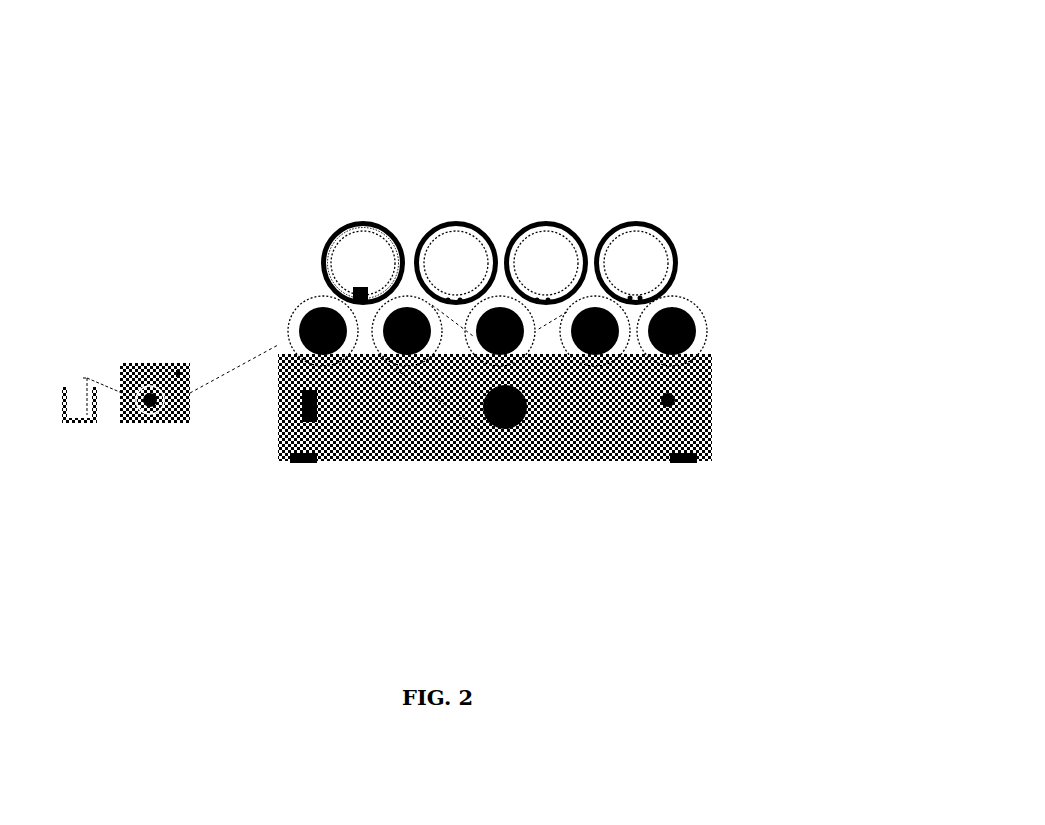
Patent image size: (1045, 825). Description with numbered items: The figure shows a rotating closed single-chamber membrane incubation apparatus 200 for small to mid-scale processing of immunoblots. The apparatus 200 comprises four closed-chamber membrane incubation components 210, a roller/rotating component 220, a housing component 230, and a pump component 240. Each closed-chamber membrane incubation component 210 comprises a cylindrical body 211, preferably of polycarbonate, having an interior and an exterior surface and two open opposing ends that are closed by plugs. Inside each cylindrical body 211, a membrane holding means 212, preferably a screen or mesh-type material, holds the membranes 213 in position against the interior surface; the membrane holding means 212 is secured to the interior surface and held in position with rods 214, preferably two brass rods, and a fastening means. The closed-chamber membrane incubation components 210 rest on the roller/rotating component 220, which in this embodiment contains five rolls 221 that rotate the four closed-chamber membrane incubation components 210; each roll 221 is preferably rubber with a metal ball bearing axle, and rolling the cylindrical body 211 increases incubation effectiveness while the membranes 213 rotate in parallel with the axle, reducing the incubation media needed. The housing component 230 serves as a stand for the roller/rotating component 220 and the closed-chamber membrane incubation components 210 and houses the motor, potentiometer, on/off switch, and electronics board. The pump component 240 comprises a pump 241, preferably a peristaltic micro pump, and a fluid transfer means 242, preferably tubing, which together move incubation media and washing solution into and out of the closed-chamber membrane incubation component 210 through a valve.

The rotating closed single-chamber membrane incubation apparatus 200 is at (566, 152).
The closed-chamber membrane incubation component 210 is at (454, 217).
The cylindrical body 211 is at (347, 219).
The membrane holding means 212 is at (340, 232).
The membranes 213 is at (328, 258).
The rods 214 is at (355, 291).
The roller/rotating component 220 is at (550, 325).
The roll 221 is at (703, 314).
The housing component 230 is at (732, 408).
The pump component 240 is at (170, 472).
The pump 241 is at (155, 426).
The fluid transfer means 242 is at (223, 380).